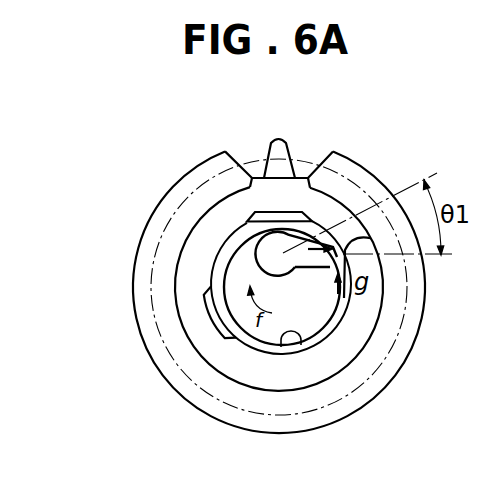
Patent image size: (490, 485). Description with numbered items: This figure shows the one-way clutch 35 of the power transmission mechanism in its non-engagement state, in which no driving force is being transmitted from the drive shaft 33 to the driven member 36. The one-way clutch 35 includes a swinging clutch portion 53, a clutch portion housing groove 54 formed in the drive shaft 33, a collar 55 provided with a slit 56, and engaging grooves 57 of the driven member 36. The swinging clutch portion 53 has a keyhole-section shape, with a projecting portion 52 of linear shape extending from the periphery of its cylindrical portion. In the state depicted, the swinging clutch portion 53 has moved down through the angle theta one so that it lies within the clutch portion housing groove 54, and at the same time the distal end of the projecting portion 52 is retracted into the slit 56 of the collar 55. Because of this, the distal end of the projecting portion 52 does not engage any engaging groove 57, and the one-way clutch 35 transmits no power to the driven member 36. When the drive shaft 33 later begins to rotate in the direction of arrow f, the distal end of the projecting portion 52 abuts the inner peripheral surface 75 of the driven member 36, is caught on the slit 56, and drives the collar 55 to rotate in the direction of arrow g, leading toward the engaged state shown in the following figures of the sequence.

The drive shaft 33 is at (209, 303).
The one-way clutch 35 is at (164, 167).
The driven member 36 is at (174, 390).
The projecting portion 52 is at (312, 236).
The swinging clutch portion 53 is at (278, 209).
The clutch portion housing groove 54 is at (338, 298).
The collar 55 is at (214, 257).
The slit 56 is at (308, 258).
The engaging groove 57 is at (298, 178).
The inner peripheral surface 75 is at (305, 339).